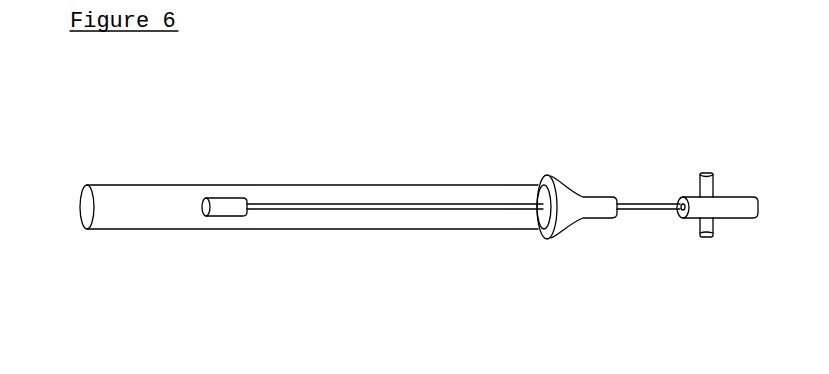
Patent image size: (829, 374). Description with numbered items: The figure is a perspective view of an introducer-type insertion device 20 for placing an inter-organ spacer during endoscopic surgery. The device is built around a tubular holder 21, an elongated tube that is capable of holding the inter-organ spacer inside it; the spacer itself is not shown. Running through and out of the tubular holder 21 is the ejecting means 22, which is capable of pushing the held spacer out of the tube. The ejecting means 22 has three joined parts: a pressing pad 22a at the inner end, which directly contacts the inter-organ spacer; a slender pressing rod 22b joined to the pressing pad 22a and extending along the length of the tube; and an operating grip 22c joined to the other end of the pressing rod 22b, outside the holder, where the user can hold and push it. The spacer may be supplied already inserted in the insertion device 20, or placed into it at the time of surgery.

The introducer-type insertion device 20 is at (640, 130).
The tubular holder 21 is at (342, 185).
The ejecting means 22 is at (705, 300).
The pressing pad 22a is at (233, 212).
The pressing rod 22b is at (503, 207).
The operating grip 22c is at (733, 218).